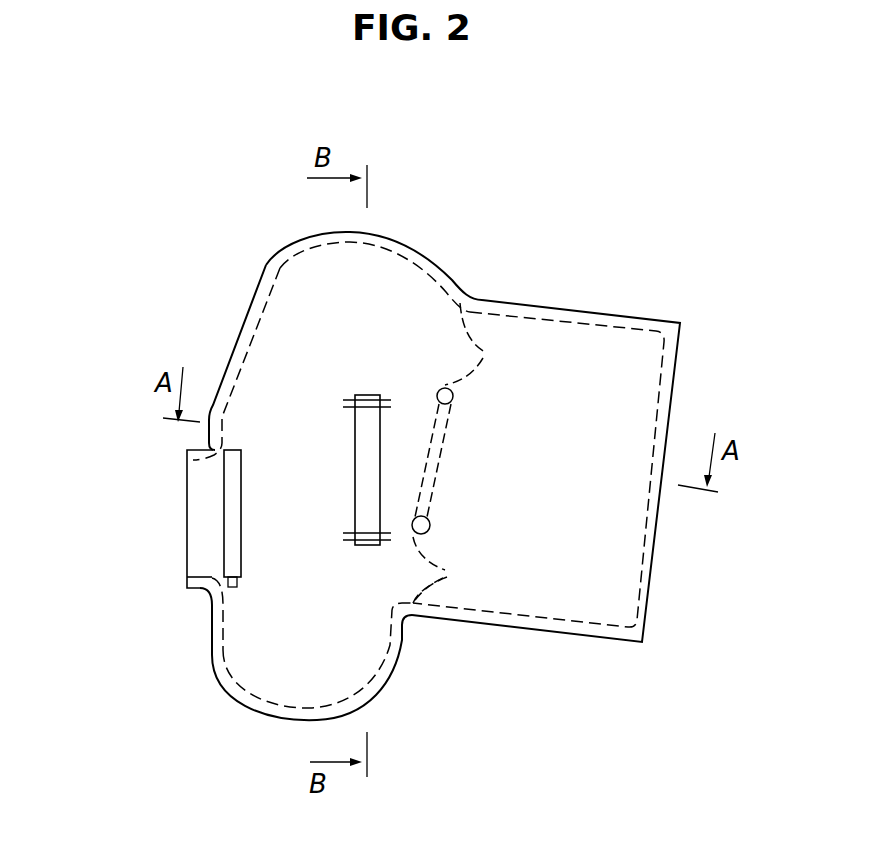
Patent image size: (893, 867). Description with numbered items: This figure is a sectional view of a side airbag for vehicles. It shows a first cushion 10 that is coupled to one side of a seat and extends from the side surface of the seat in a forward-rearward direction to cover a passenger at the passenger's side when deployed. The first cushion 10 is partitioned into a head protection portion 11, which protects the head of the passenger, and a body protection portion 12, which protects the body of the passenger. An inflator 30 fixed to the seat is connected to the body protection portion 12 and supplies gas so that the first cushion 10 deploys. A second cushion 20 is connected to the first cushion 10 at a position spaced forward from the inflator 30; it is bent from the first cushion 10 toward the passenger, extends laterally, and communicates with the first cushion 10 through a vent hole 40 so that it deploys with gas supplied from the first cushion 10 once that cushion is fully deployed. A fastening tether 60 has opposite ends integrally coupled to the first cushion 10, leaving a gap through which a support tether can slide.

The first cushion 10 is at (337, 465).
The head protection portion 11 is at (334, 275).
The body protection portion 12 is at (288, 655).
The second cushion 20 is at (598, 348).
The inflator 30 is at (232, 510).
The vent hole 40 is at (462, 330).
The fastening tether 60 is at (357, 508).